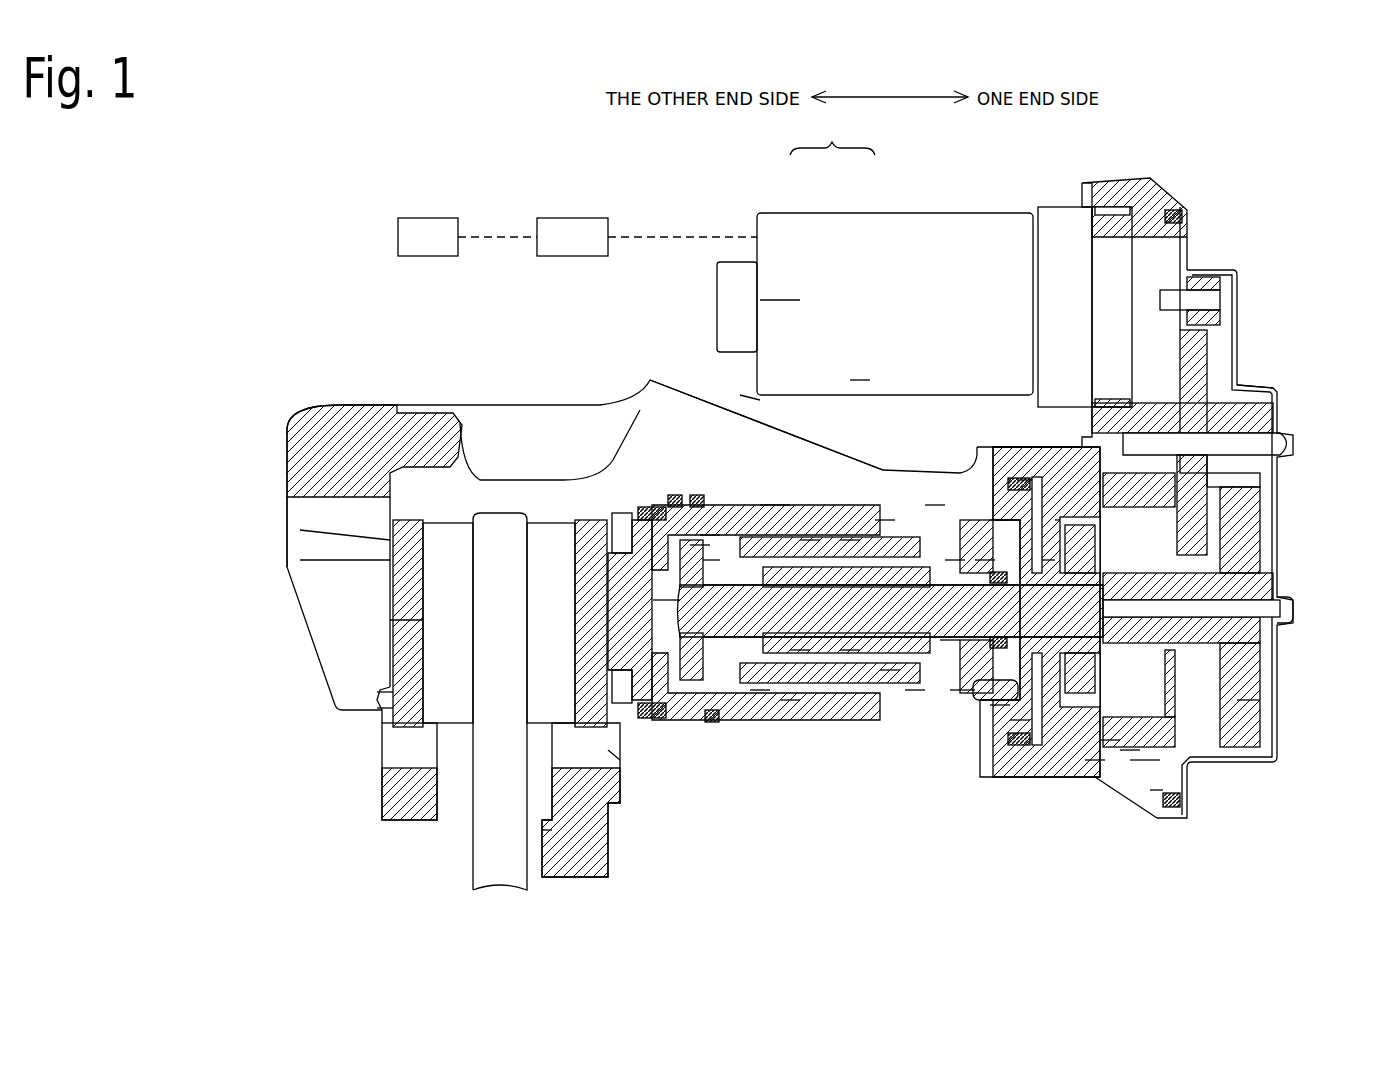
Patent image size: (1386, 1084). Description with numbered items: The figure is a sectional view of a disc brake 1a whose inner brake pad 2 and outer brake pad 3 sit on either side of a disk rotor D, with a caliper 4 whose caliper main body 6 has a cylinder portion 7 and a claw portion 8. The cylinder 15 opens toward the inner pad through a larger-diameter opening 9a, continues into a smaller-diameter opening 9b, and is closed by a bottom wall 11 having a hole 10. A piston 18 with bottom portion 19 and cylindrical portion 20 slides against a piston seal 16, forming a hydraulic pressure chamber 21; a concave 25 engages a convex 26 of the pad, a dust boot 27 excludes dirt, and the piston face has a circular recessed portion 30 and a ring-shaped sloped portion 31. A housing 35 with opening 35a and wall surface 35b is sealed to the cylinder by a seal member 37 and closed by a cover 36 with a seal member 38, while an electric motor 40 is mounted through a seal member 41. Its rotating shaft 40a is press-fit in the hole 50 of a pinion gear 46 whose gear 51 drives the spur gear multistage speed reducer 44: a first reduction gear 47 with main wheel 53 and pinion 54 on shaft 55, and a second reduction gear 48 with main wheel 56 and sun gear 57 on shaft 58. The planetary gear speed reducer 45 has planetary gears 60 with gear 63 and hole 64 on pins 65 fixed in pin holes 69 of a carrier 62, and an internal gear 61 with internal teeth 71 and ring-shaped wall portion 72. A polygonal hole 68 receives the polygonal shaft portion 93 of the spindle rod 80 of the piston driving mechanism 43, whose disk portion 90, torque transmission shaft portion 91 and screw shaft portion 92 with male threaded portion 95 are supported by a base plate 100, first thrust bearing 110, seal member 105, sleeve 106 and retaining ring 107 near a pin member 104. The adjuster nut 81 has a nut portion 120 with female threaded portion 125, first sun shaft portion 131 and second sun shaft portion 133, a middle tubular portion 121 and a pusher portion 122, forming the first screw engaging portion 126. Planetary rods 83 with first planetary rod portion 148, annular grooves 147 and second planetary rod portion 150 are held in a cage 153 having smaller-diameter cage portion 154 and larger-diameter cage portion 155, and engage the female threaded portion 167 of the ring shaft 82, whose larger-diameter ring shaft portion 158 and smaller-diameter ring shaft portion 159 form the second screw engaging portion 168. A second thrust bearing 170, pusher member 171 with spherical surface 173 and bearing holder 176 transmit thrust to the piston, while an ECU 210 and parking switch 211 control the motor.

The disc brake 1a is at (298, 247).
The inner brake pad 2 is at (565, 760).
The outer brake pad 3 is at (445, 762).
The caliper 4 is at (333, 395).
The caliper main body 6 is at (497, 432).
The cylinder portion 7 is at (680, 470).
The claw portion 8 is at (390, 650).
The larger-diameter opening 9a is at (770, 655).
The smaller-diameter opening 9b is at (870, 655).
The hole 10 is at (975, 700).
The bottom wall 11 is at (1000, 650).
The cylinder 15 is at (840, 685).
The piston seal 16 is at (672, 495).
The piston 18 is at (700, 545).
The bottom portion 19 is at (668, 722).
The cylindrical portion 20 is at (720, 722).
The hydraulic pressure chamber 21 is at (870, 685).
The concave 25 is at (610, 760).
The convex 26 is at (560, 830).
The dust boot 27 is at (648, 505).
The circular recessed portion 30 is at (385, 688).
The ring-shaped sloped portion 31 is at (625, 500).
The housing 35 is at (1070, 780).
The opening 35a is at (1020, 725).
The wall surface 35b is at (1200, 608).
The cover 36 is at (1278, 740).
The seal member 37 is at (1000, 710).
The seal member 38 is at (1160, 792).
The electric motor 40 is at (757, 290).
The rotating shaft 40a is at (1215, 300).
The seal member 41 is at (1130, 200).
The piston driving mechanism 43 is at (420, 640).
The spur gear multistage speed reducer 44 is at (1262, 540).
The planetary gear speed reducer 45 is at (1150, 775).
The pinion gear 46 is at (1205, 315).
The first reduction gear 47 is at (1200, 420).
The second reduction gear 48 is at (1250, 700).
The hole 50 is at (1185, 260).
The gear 51 is at (1205, 282).
The main wheel 53 is at (1210, 370).
The pinion 54 is at (1250, 393).
The shaft 55 is at (1255, 445).
The main wheel 56 is at (1175, 640).
The sun gear 57 is at (1175, 580).
The shaft 58 is at (1295, 612).
The planetary gear 60 is at (1210, 490).
The internal gear 61 is at (1130, 765).
The carrier 62 is at (1095, 765).
The gear 63 is at (1170, 210).
The hole 64 is at (1210, 522).
The pin 65 is at (1065, 520).
The polygonal hole 68 is at (1183, 800).
The pin hole 69 is at (1045, 560).
The internal teeth 71 is at (1110, 745).
The ring-shaped wall portion 72 is at (1240, 740).
The spindle rod 80 is at (390, 600).
The adjuster nut 81 is at (775, 500).
The ring shaft 82 is at (700, 722).
The planetary rod 83 is at (890, 675).
The disk portion 90 is at (945, 650).
The torque transmission shaft portion 91 is at (1070, 700).
The screw shaft portion 92 is at (852, 378).
The polygonal shaft portion 93 is at (1185, 765).
The male threaded portion 95 is at (850, 540).
The base plate 100 is at (985, 560).
The pin member 104 is at (960, 700).
The seal member 105 is at (1000, 520).
The sleeve 106 is at (1027, 480).
The retaining ring 107 is at (1050, 710).
The first thrust bearing 110 is at (955, 560).
The nut portion 120 is at (800, 340).
The middle tubular portion 121 is at (718, 510).
The pusher portion 122 is at (695, 495).
The female threaded portion 125 is at (810, 540).
The first screw engaging portion 126 is at (832, 131).
The first sun shaft portion 131 is at (885, 520).
The second sun shaft portion 133 is at (792, 395).
The annular groove 147 is at (850, 655).
The first planetary rod portion 148 is at (915, 700).
The second planetary rod portion 150 is at (790, 705).
The cage 153 is at (752, 400).
The smaller-diameter cage portion 154 is at (935, 505).
The larger-diameter cage portion 155 is at (737, 300).
The larger-diameter ring shaft portion 158 is at (940, 700).
The smaller-diameter ring shaft portion 159 is at (760, 695).
The female threaded portion 167 is at (800, 655).
The second screw engaging portion 168 is at (865, 892).
The second thrust bearing 170 is at (708, 722).
The pusher member 171 is at (420, 560).
The spherical surface 173 is at (690, 722).
The bearing holder 176 is at (385, 702).
The ECU 210 is at (572, 216).
The parking switch 211 is at (428, 216).
The disk rotor D is at (503, 872).